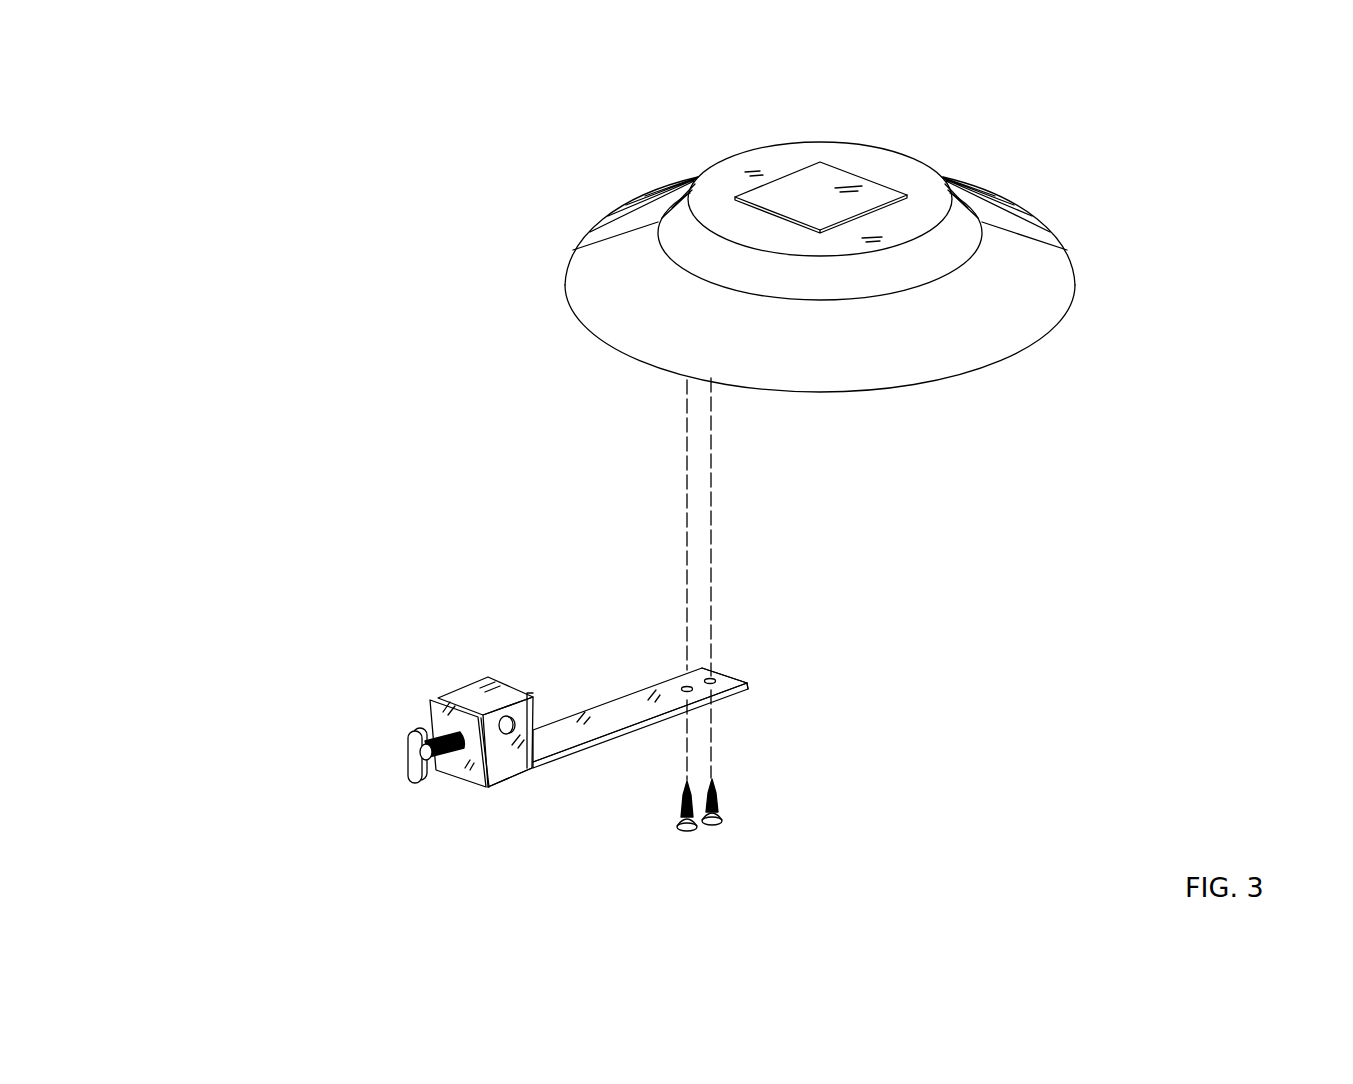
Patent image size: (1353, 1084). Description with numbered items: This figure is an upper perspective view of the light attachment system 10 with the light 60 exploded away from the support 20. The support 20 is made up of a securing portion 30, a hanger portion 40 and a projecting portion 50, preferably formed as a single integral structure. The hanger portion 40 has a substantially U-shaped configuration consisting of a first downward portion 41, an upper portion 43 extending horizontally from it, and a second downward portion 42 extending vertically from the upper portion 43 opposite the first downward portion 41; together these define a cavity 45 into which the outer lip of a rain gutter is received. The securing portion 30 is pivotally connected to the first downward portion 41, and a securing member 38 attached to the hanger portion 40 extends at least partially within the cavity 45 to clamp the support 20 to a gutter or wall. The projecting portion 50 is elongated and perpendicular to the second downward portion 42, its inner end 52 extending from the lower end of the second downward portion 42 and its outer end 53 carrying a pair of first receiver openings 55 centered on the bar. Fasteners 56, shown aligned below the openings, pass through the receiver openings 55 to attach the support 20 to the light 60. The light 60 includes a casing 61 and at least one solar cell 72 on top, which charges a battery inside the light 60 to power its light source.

The light attachment system 10 is at (241, 171).
The support 20 is at (317, 572).
The securing portion 30 is at (430, 700).
The securing member 38 is at (426, 783).
The hanger portion 40 is at (475, 680).
The first downward portion 41 is at (497, 786).
The second downward portion 42 is at (532, 708).
The upper portion 43 is at (458, 688).
The cavity 45 is at (518, 783).
The projecting portion 50 is at (757, 672).
The inner end 52 is at (580, 759).
The outer end 53 is at (738, 692).
The first receiver opening 55 is at (683, 690).
The fasteners 56 is at (695, 832).
The light 60 is at (1084, 275).
The casing 61 is at (1002, 340).
The solar cell 72 is at (827, 178).